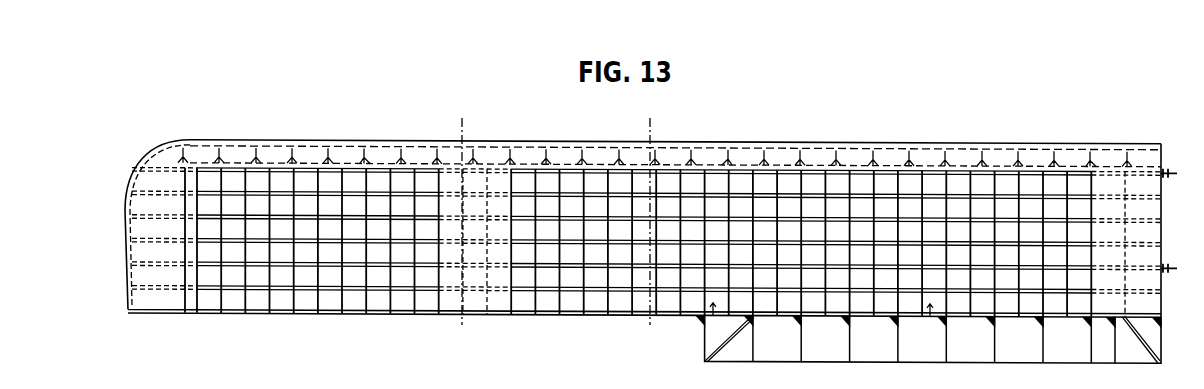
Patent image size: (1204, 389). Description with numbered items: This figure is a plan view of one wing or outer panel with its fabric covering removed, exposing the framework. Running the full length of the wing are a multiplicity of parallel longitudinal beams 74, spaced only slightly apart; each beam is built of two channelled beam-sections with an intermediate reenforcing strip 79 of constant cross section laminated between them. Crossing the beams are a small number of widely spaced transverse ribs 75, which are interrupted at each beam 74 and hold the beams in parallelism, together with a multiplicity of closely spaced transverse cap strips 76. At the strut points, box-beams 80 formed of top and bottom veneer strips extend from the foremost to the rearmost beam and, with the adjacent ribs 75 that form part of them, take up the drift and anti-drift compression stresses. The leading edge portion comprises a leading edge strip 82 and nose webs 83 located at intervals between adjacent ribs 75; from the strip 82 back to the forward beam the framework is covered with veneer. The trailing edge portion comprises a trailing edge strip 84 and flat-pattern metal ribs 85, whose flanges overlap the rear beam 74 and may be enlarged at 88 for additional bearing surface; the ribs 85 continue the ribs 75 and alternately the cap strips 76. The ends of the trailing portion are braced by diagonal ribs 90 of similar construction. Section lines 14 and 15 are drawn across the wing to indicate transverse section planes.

The section line 14 is at (647, 229).
The section line 15 is at (459, 221).
The longitudinal beam 74 is at (373, 188).
The transverse rib 75 is at (292, 168).
The transverse cap strip 76 is at (602, 178).
The intermediate reenforcing strip 79 is at (572, 263).
The box-beam 80 is at (495, 178).
The leading edge strip 82 is at (818, 147).
The nose web 83 is at (910, 150).
The trailing edge strip 84 is at (940, 363).
The trailing edge rib 85 is at (895, 338).
The enlarged overlapping portion 88 is at (1040, 318).
The diagonal rib 90 is at (724, 340).